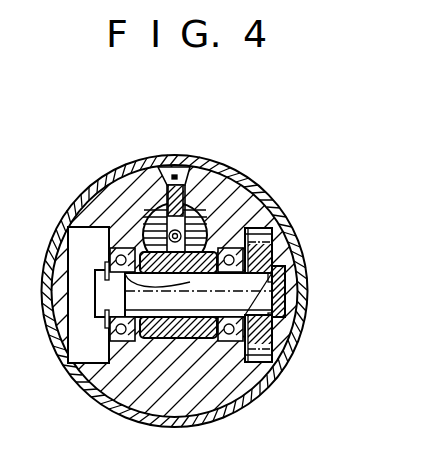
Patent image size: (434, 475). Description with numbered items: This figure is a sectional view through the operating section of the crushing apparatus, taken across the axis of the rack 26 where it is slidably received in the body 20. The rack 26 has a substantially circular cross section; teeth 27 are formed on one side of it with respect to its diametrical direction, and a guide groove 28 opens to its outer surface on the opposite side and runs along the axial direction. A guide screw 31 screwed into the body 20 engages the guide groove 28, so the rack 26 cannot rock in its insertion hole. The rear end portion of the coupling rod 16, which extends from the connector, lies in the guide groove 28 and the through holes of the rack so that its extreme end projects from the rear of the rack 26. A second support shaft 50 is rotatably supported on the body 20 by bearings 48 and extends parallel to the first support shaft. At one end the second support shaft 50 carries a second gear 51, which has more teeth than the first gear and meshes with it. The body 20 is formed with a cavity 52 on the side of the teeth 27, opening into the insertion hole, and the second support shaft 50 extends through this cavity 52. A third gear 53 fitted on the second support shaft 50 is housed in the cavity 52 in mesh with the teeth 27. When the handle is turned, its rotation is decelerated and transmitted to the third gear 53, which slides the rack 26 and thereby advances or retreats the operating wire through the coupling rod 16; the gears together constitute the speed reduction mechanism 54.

The coupling rod 16 is at (196, 206).
The body 20 is at (95, 377).
The rack 26 is at (210, 214).
The teeth 27 is at (128, 288).
The guide groove 28 is at (168, 222).
The guide screw 31 is at (185, 168).
The bearings 48 is at (133, 342).
The second support shaft 50 is at (286, 292).
The second gear 51 is at (283, 340).
The cavity 52 is at (137, 338).
The third gear 53 is at (190, 330).
The speed reduction mechanism 54 is at (322, 232).